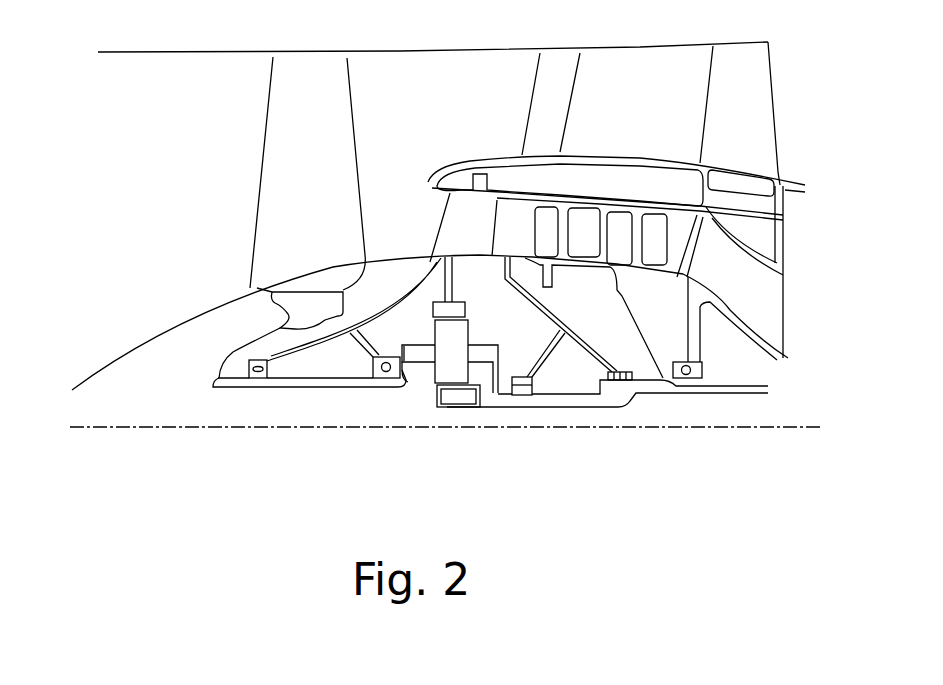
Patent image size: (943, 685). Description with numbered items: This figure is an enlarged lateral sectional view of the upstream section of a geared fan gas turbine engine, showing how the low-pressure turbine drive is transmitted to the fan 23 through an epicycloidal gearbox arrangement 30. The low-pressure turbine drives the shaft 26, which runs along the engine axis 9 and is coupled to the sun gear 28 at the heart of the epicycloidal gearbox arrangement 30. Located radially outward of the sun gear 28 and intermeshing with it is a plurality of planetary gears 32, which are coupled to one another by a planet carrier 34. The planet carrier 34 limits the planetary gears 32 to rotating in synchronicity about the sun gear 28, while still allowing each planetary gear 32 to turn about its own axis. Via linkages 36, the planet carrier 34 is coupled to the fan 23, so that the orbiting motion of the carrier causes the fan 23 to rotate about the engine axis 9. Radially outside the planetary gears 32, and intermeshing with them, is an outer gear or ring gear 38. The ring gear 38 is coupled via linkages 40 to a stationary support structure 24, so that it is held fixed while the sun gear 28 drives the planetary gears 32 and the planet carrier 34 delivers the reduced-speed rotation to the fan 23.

The engine axis 9 is at (243, 428).
The fan 23 is at (278, 175).
The stationary support structure 24 is at (458, 220).
The shaft 26 is at (587, 410).
The sun gear 28 is at (453, 397).
The epicycloidal gearbox arrangement 30 is at (403, 407).
The planetary gears 32 is at (431, 388).
The planet carrier 34 is at (492, 383).
The linkages 36 is at (408, 367).
The ring gear 38 is at (436, 308).
The linkages 40 is at (450, 290).